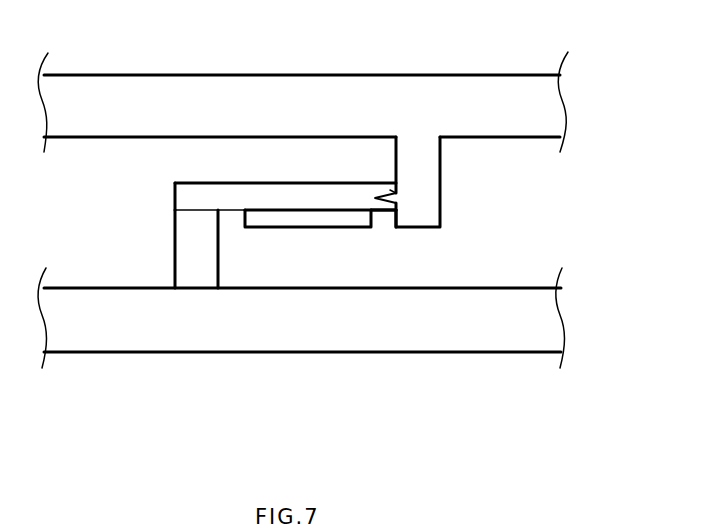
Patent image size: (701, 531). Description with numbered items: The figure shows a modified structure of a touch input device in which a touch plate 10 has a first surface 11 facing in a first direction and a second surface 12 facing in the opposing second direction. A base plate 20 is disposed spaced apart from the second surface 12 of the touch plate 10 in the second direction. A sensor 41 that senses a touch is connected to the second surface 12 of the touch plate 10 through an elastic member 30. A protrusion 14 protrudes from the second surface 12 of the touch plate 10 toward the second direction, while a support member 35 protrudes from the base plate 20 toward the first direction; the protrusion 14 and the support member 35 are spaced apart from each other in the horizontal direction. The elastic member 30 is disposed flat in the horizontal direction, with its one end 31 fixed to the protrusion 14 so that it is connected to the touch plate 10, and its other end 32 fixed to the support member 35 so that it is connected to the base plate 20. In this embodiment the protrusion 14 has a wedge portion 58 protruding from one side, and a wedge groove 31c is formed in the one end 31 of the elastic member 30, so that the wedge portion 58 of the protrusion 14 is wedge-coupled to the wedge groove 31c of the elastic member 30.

The touch plate 10 is at (303, 119).
The first surface 11 is at (483, 75).
The second surface 12 is at (68, 138).
The protrusion 14 is at (428, 162).
The base plate 20 is at (305, 352).
The elastic member 30 is at (315, 215).
The one end of the elastic member 31 is at (382, 212).
The wedge groove 31c is at (385, 199).
The other end of the elastic member 32 is at (180, 200).
The support member 35 is at (180, 243).
The sensor 41 is at (305, 218).
The wedge portion 58 is at (390, 190).